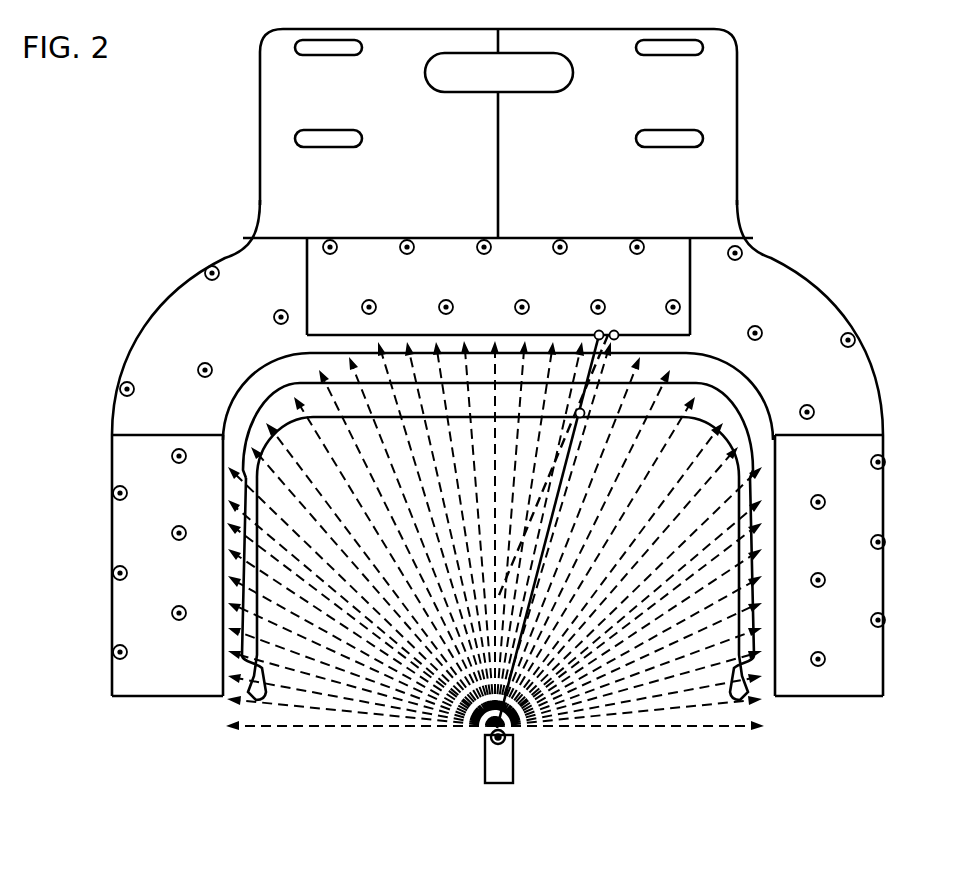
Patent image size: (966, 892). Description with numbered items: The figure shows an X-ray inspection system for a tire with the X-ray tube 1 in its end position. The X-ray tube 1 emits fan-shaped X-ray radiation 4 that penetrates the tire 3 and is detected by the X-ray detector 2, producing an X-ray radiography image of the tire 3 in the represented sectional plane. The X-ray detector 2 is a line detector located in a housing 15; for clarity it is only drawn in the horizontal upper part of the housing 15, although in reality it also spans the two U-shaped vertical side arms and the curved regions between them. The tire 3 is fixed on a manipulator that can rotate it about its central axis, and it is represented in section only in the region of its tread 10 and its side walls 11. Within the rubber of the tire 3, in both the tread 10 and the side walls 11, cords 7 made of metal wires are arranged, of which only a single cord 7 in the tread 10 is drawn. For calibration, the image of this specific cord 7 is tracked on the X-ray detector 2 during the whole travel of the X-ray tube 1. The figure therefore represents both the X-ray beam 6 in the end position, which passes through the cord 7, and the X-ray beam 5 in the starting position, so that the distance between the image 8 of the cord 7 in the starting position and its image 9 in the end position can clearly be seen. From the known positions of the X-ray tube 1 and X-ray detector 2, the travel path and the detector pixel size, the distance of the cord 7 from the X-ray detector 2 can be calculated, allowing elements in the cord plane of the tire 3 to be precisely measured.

The X-ray tube 1 is at (490, 768).
The X-ray detector 2 is at (672, 336).
The tire 3 is at (283, 414).
The X-ray radiation 4 is at (310, 572).
The X-ray beam in the starting position 5 is at (532, 517).
The X-ray beam in the end position 6 is at (578, 446).
The cord 7 is at (584, 414).
The image of the cord in the starting position 8 is at (615, 331).
The image of the cord in the end position 9 is at (600, 331).
The tread 10 is at (350, 403).
The side walls 11 is at (247, 513).
The housing 15 is at (852, 393).